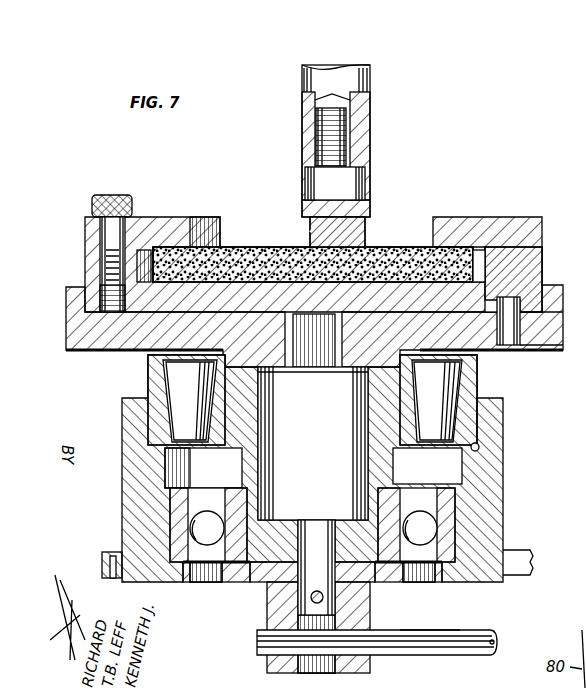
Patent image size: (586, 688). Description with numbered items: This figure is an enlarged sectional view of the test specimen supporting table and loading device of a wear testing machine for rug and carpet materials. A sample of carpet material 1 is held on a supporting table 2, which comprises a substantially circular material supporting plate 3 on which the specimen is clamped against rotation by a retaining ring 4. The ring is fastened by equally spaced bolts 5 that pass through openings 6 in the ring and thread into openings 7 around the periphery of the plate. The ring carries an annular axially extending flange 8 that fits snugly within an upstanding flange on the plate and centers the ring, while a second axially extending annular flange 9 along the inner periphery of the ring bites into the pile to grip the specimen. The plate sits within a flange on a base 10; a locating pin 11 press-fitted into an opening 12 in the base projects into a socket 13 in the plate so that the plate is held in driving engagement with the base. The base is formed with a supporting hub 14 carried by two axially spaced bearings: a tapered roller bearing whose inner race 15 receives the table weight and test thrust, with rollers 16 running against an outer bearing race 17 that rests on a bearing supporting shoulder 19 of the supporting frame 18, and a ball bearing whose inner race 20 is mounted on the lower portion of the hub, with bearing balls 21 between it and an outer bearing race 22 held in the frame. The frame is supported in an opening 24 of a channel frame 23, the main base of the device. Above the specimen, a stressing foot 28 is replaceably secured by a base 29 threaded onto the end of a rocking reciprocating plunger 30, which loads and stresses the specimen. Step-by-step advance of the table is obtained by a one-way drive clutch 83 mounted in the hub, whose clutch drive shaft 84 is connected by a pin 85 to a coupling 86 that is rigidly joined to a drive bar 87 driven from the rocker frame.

The test specimen 1 is at (398, 252).
The supporting table 2 is at (308, 286).
The material supporting plate 3 is at (532, 265).
The retaining ring 4 is at (493, 226).
The bolts 5 is at (90, 207).
The openings 6 is at (100, 232).
The openings 7 is at (100, 292).
The annular axially extending flange 8 is at (528, 250).
The second axially extending annular flange 9 is at (214, 256).
The base 10 is at (108, 353).
The locating pin 11 is at (545, 326).
The opening 12 is at (535, 350).
The socket 13 is at (515, 297).
The supporting hub 14 is at (248, 463).
The inner race 15 is at (413, 444).
The rollers 16 is at (180, 378).
The outer bearing race 17 is at (466, 412).
The supporting frame 18 is at (505, 470).
The bearing supporting shoulder 19 is at (481, 447).
The inner race 20 is at (220, 583).
The bearing balls 21 is at (160, 518).
The outer bearing race 22 is at (452, 520).
The channel frame 23 is at (104, 560).
The opening 24 is at (110, 552).
The stressing foot 28 is at (305, 238).
The base 29 is at (312, 185).
The rocking reciprocating plunger 30 is at (318, 123).
The one-way drive clutch 83 is at (240, 478).
The clutch drive shaft 84 is at (300, 586).
The pin 85 is at (337, 597).
The coupling 86 is at (360, 627).
The drive bar 87 is at (420, 640).